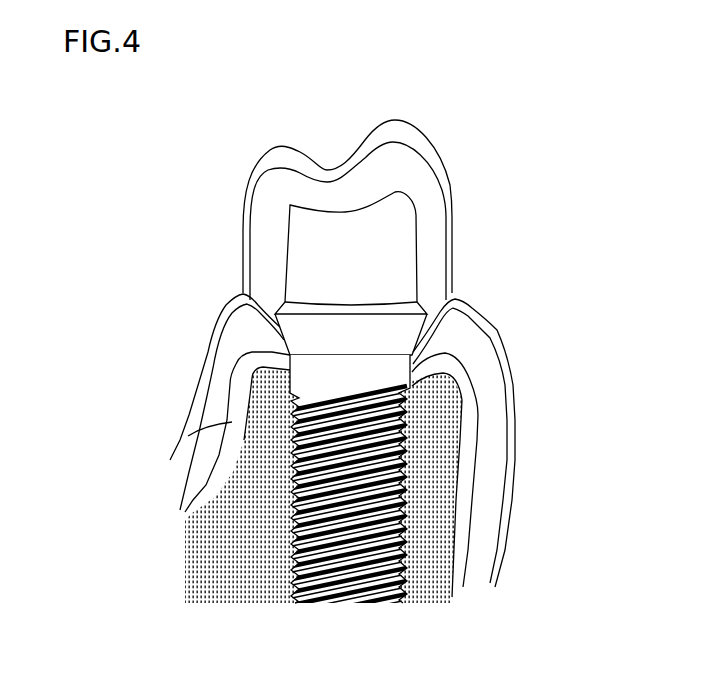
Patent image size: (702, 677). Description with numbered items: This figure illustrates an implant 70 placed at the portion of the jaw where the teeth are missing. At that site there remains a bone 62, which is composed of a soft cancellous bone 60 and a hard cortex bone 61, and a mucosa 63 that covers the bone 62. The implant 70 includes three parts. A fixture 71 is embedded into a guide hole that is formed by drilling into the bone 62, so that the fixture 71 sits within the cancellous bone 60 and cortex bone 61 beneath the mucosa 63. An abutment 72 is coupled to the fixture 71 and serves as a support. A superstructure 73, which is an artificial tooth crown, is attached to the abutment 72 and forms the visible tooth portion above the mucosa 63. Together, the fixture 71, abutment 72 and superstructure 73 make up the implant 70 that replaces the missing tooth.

The cancellous bone 60 is at (262, 505).
The cortex bone 61 is at (172, 451).
The bone 62 is at (85, 432).
The mucosa 63 is at (221, 367).
The implant 70 is at (467, 255).
The fixture 71 is at (405, 490).
The abutment 72 is at (410, 225).
The superstructure 73 is at (423, 128).